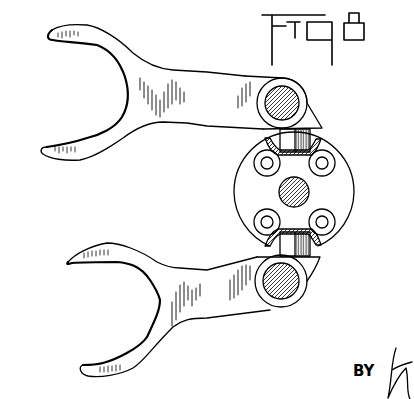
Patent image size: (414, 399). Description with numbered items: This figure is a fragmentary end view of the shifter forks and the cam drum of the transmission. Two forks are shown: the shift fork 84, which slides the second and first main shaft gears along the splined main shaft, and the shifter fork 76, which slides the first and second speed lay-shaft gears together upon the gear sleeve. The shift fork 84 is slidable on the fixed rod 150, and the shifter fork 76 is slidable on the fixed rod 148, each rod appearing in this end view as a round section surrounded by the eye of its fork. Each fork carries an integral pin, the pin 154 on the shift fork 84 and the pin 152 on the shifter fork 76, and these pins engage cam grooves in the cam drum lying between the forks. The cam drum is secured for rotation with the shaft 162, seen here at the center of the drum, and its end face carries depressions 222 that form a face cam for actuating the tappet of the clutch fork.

The shift fork 84 is at (173, 70).
The shifter fork 76 is at (227, 317).
The fixed rod 150 is at (284, 100).
The fixed rod 148 is at (287, 288).
The integral pin 154 is at (304, 137).
The integral pin 152 is at (307, 251).
The depressions 222 is at (391, 176).
The shaft 162 is at (309, 192).